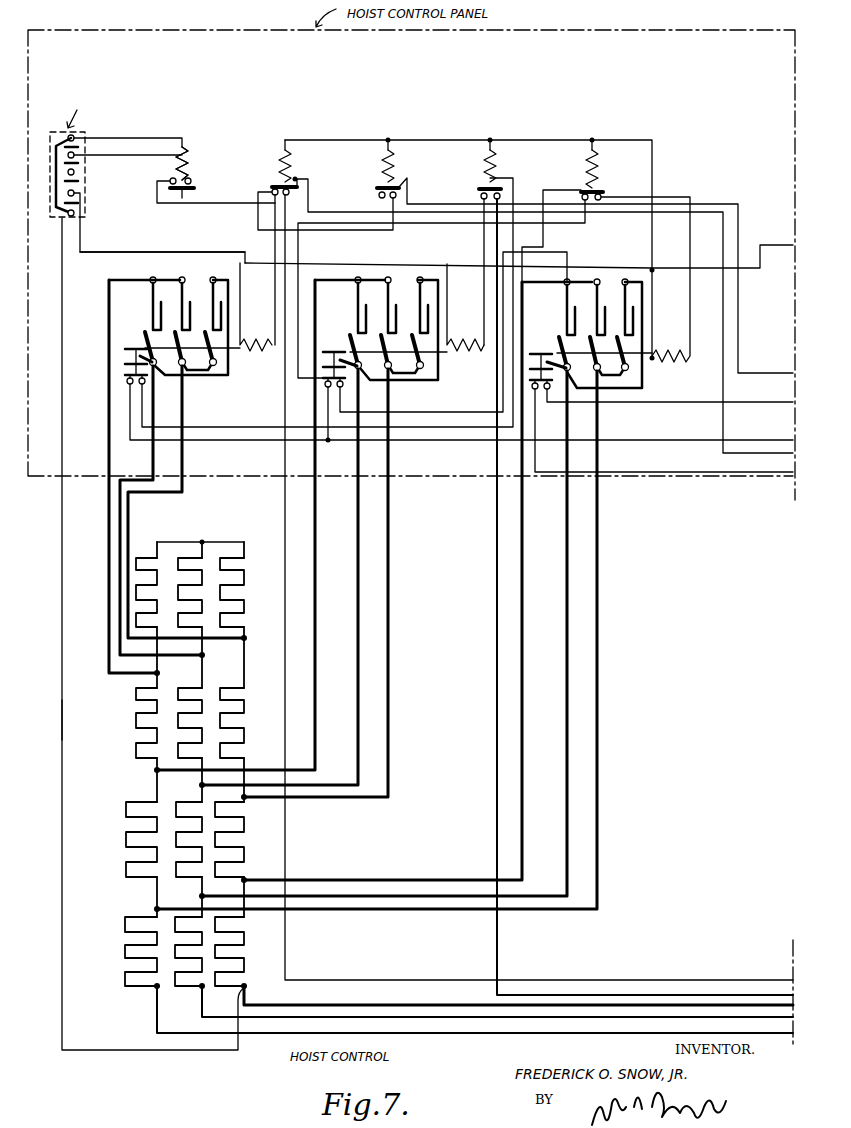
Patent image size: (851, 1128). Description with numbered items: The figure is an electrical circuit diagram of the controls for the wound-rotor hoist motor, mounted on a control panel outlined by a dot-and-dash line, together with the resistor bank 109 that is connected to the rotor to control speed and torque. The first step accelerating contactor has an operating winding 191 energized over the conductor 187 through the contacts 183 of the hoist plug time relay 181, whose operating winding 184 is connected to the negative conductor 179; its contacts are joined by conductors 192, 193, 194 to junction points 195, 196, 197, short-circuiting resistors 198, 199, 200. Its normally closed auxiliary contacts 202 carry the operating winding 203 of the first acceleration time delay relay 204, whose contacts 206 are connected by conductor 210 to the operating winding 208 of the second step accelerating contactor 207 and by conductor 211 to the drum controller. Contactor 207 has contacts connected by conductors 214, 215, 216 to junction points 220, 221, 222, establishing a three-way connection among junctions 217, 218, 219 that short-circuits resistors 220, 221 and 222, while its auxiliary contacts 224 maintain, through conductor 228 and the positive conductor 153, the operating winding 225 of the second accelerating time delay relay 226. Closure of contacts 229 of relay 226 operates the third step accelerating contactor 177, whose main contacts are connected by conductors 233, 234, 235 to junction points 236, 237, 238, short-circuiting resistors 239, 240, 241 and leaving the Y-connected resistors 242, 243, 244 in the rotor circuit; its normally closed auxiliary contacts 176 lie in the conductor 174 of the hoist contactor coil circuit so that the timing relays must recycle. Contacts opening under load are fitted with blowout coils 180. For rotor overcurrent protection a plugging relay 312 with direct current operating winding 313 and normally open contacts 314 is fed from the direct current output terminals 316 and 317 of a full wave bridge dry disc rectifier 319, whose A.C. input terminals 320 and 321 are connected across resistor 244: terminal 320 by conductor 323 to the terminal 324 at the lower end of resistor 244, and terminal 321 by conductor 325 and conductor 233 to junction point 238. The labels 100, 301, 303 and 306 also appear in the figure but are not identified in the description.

The direct current output terminal 316 is at (74, 138).
The A.C. input terminal 320 is at (74, 155).
The direct current output terminal 317 is at (74, 172).
The A.C. input terminal 321 is at (74, 193).
The full wave bridge type dry disc rectifier 319 is at (91, 224).
The plugging relay 312 is at (189, 129).
The direct current operating winding 313 is at (189, 151).
The normally open contacts 314 is at (184, 198).
The conductor 325 is at (163, 247).
The negative conductor 179 is at (246, 256).
The relay 301 is at (291, 133).
The hoist plug time relay 181 is at (399, 139).
The operating winding 184 is at (395, 173).
The contacts 183 is at (378, 184).
The relay coil 303 is at (281, 160).
The conductor 306 is at (295, 179).
The first acceleration time delay relay 204 is at (500, 138).
The operating winding 203 is at (495, 161).
The contacts 206 is at (481, 188).
The conductor 210 is at (482, 239).
The second accelerating time delay relay 226 is at (601, 137).
The operating winding 225 is at (600, 163).
The contacts 229 is at (600, 190).
The positive conductor 153 is at (565, 223).
The blowout coils 180 is at (152, 318).
The operating winding 191 is at (252, 340).
The contactor 100 is at (193, 391).
The normally closed auxiliary contacts 202 is at (124, 376).
The auxiliary contacts 224 is at (318, 380).
The operating winding 208 is at (480, 333).
The normally closed auxiliary contacts 176 is at (530, 380).
The second step accelerating contactor 207 is at (407, 391).
The conductor 228 is at (444, 416).
The third step accelerating contactor 177 is at (658, 374).
The conductor 174 is at (714, 476).
The conductor 192 is at (108, 516).
The conductor 193 is at (120, 535).
The conductor 194 is at (128, 553).
The resistor 198 is at (142, 558).
The resistor bank 109 is at (205, 532).
The resistor 199 is at (203, 560).
The resistor 200 is at (245, 578).
The junction point 197 is at (245, 638).
The junction point 196 is at (204, 655).
The junction point 195 is at (159, 673).
The conductor 187 is at (283, 497).
The conductor 214 is at (313, 556).
The conductor 215 is at (358, 554).
The conductor 216 is at (390, 581).
The conductor 211 is at (497, 624).
The conductor 233 is at (522, 687).
The conductor 234 is at (568, 643).
The conductor 235 is at (598, 593).
The conductor 323 is at (63, 728).
The resistor 220 is at (136, 718).
The resistor 221 is at (178, 747).
The resistor 222 is at (235, 702).
The junction 217 is at (156, 770).
The junction 218 is at (200, 786).
The junction 219 is at (246, 799).
The resistor 239 is at (126, 838).
The resistor 240 is at (176, 862).
The resistor 241 is at (246, 826).
The junction point 238 is at (246, 877).
The junction point 237 is at (200, 896).
The junction point 236 is at (157, 909).
The resistor 242 is at (125, 948).
The resistor 243 is at (176, 947).
The resistor 244 is at (246, 937).
The terminal 324 is at (246, 986).